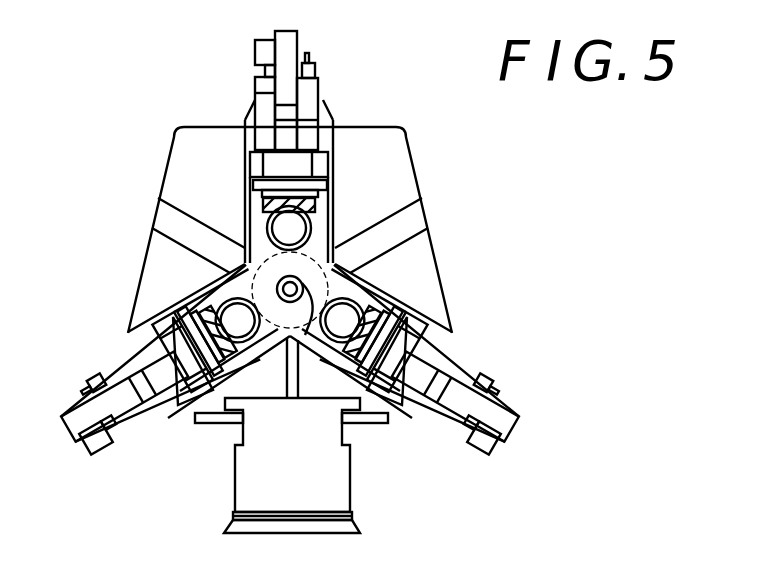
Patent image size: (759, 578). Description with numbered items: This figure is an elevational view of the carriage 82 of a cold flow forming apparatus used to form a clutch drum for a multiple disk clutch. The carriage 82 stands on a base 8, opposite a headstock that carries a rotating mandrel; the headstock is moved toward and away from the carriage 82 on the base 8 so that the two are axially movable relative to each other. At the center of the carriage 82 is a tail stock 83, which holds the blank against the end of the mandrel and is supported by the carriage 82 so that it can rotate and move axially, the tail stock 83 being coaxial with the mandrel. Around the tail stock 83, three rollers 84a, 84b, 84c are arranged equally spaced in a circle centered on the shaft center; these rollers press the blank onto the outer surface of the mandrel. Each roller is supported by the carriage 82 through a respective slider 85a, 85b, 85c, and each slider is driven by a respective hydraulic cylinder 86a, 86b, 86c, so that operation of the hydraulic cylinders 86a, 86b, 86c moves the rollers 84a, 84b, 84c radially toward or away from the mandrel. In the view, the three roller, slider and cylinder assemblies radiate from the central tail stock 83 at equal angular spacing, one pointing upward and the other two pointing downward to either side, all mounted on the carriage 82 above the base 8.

The base 8 is at (350, 480).
The carriage 82 is at (440, 270).
The tail stock 83 is at (301, 345).
The roller 84a is at (333, 220).
The roller 84b is at (420, 277).
The roller 84c is at (226, 282).
The slider 85a is at (245, 197).
The slider 85b is at (436, 310).
The slider 85c is at (143, 310).
The hydraulic cylinder 86a is at (313, 105).
The hydraulic cylinder 86b is at (442, 402).
The hydraulic cylinder 86c is at (148, 408).